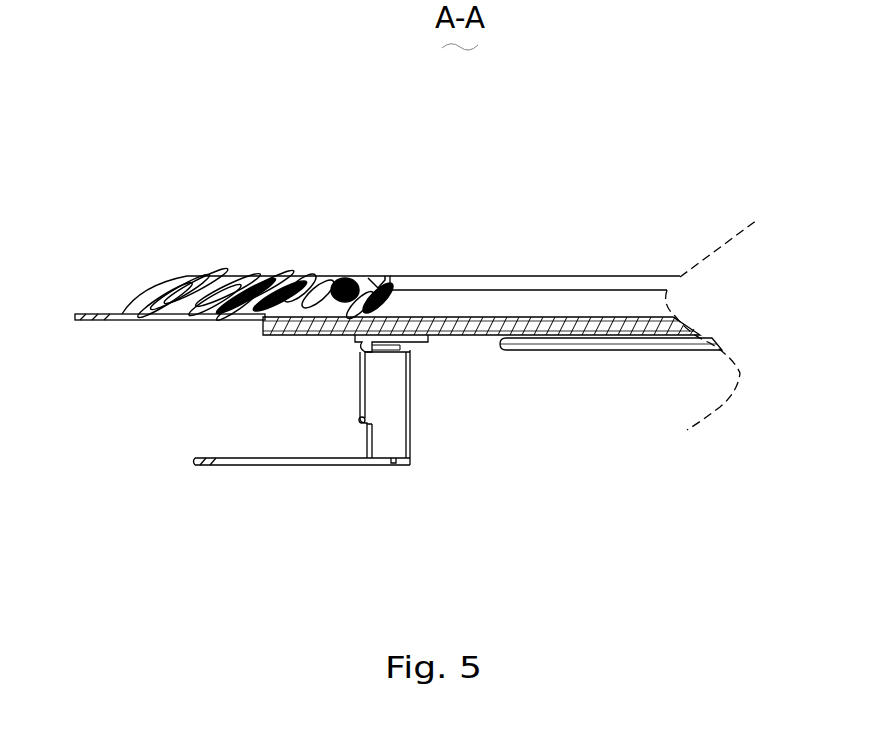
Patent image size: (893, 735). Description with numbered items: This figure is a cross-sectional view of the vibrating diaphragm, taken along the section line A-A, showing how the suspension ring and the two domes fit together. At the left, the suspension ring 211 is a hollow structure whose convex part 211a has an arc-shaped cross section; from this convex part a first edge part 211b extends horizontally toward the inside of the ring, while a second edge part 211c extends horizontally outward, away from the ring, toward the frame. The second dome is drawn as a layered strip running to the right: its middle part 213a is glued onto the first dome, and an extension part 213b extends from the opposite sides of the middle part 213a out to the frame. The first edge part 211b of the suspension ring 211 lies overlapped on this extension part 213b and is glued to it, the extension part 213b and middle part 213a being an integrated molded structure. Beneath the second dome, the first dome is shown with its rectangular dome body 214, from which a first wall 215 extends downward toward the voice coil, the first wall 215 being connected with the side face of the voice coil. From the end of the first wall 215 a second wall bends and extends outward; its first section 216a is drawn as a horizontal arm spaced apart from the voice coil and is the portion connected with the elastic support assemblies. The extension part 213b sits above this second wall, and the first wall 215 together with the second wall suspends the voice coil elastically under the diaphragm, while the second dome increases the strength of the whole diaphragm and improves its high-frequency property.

The suspension ring 211 is at (272, 178).
The convex part 211a is at (183, 273).
The first edge part 211b is at (292, 290).
The second edge part 211c is at (93, 314).
The middle part 213a is at (490, 317).
The extension part 213b is at (323, 335).
The dome body 214 is at (540, 342).
The first wall 215 is at (388, 408).
The first section 216a is at (215, 462).